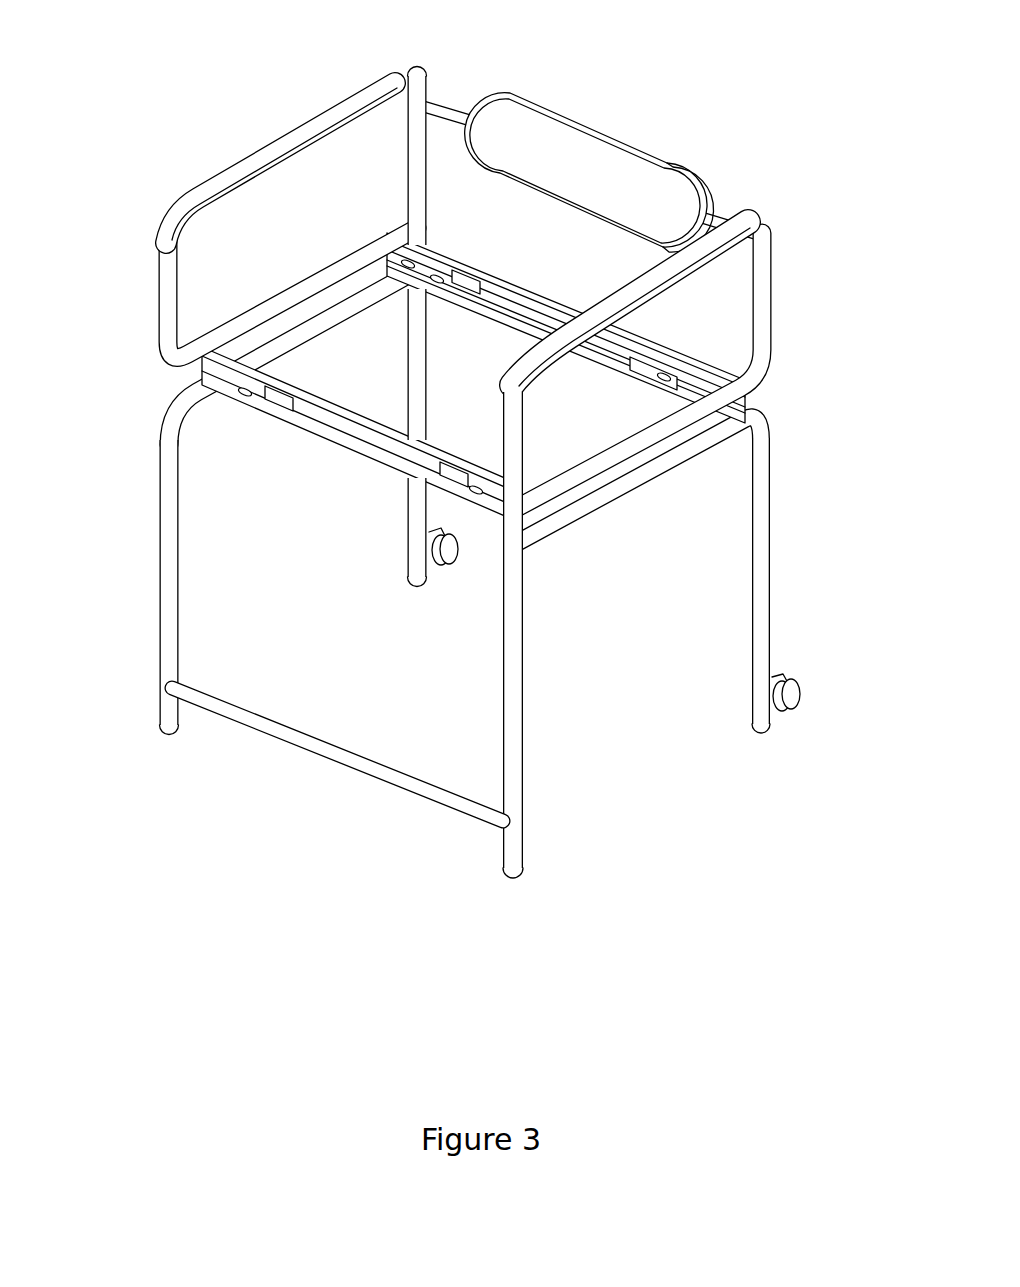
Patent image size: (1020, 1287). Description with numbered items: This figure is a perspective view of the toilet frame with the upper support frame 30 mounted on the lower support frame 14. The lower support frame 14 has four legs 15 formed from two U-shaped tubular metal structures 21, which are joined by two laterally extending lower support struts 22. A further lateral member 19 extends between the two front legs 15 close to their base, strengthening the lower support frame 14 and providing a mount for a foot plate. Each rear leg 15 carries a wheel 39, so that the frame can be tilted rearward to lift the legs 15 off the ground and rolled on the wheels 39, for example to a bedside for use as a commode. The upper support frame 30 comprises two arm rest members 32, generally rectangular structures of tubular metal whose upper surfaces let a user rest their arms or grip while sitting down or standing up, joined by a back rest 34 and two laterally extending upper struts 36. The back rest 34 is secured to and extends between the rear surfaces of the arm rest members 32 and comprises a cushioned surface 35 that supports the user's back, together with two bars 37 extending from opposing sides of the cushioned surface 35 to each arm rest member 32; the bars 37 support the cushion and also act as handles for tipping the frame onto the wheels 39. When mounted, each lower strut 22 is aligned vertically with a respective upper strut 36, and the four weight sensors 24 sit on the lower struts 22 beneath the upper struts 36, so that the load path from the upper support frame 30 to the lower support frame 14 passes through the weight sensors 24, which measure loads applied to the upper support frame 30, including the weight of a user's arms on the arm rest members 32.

The lower support frame 14 is at (759, 776).
The legs 15 is at (407, 490).
The lateral member 19 is at (308, 743).
The U-shaped tubular metal structures 21 is at (198, 402).
The lower support struts 22 is at (515, 317).
The weight sensors 24 is at (398, 250).
The upper support frame 30 is at (158, 122).
The arm rest members 32 is at (278, 150).
The back rest 34 is at (601, 151).
The cushioned surface 35 is at (528, 160).
The upper struts 36 is at (467, 268).
The bars 37 is at (458, 120).
The wheels 39 is at (430, 553).